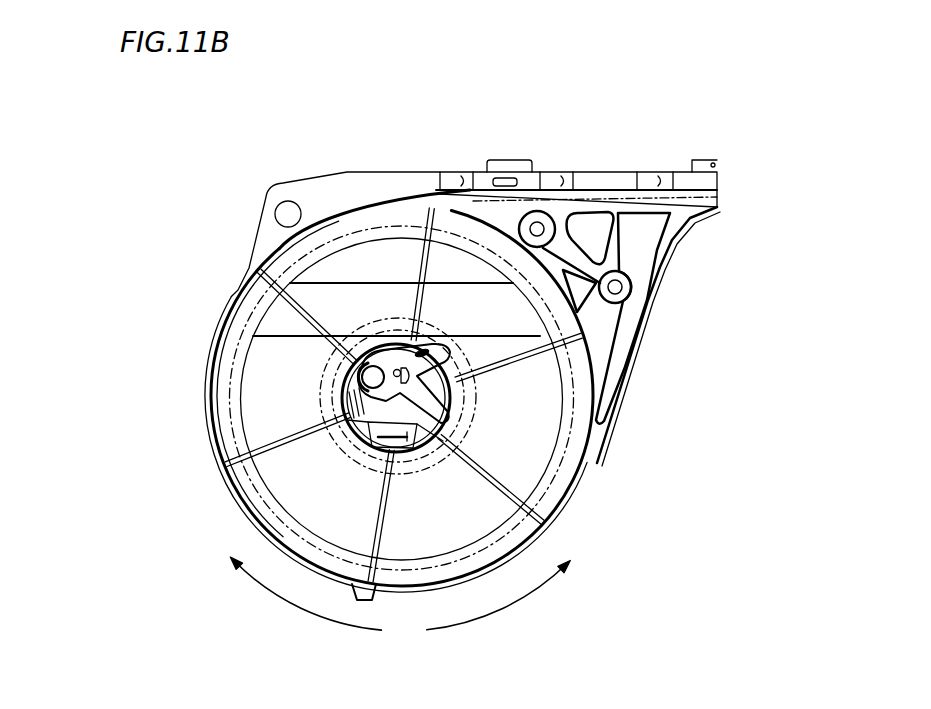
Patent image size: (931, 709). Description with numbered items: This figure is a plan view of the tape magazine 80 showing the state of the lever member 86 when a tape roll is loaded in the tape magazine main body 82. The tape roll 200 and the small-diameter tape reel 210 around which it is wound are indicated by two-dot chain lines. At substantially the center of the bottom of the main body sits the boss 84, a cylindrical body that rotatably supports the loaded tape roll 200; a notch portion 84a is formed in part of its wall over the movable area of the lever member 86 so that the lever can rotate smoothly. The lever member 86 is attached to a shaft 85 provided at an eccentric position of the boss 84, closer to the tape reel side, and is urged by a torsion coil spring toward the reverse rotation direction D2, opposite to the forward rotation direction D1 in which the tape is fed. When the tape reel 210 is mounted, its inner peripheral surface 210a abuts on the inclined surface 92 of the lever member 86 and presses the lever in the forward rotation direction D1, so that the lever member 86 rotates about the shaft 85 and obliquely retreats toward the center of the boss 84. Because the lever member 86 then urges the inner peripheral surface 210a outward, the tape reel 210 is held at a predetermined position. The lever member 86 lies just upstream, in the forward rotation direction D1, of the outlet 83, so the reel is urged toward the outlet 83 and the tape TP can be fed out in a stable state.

The tape magazine 80 is at (593, 478).
The tape magazine main body 82 is at (240, 482).
The outlet 83 is at (530, 212).
The boss 84 is at (345, 355).
The notch portion 84a is at (372, 344).
The shaft 85 is at (341, 399).
The lever member 86 is at (401, 344).
The inclined surface 92 is at (430, 348).
The tape roll 200 is at (228, 389).
The tape reel 210 is at (478, 430).
The inner peripheral surface 210a is at (465, 383).
The tape TP is at (605, 190).
The forward rotation direction D1 is at (305, 602).
The reverse rotation direction D2 is at (499, 607).